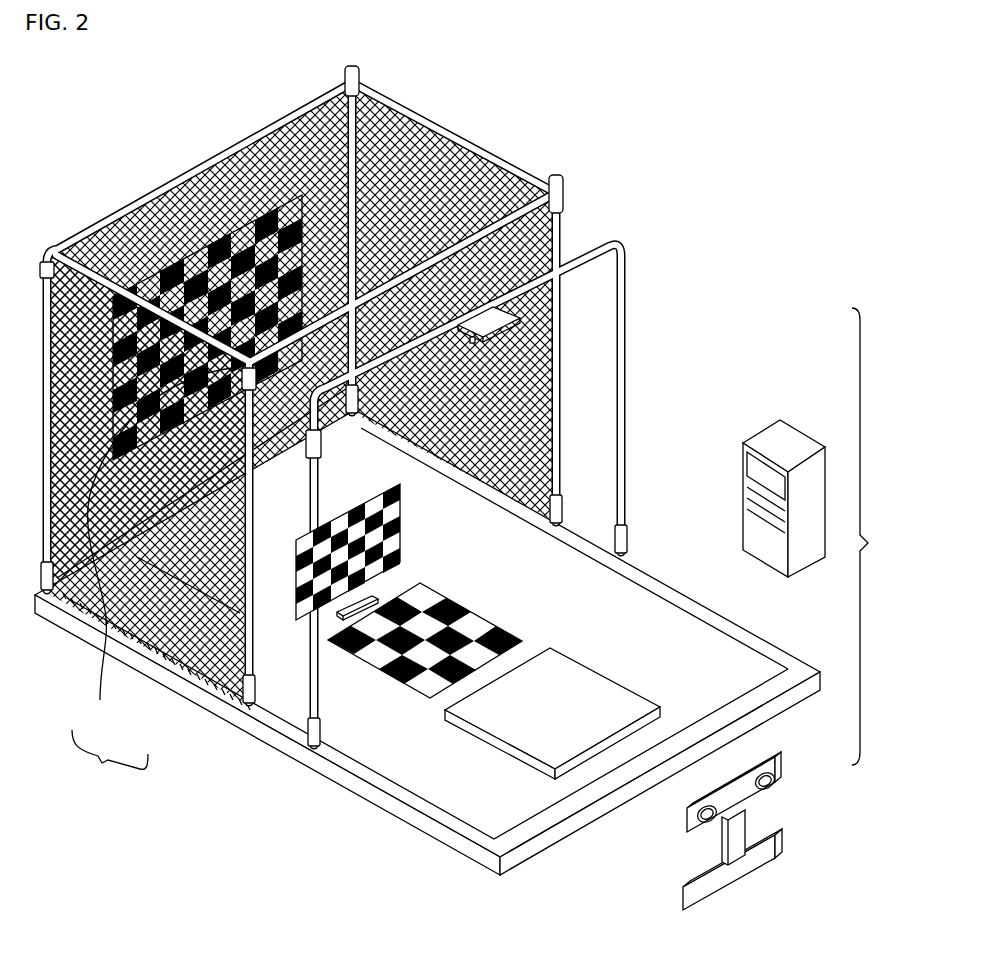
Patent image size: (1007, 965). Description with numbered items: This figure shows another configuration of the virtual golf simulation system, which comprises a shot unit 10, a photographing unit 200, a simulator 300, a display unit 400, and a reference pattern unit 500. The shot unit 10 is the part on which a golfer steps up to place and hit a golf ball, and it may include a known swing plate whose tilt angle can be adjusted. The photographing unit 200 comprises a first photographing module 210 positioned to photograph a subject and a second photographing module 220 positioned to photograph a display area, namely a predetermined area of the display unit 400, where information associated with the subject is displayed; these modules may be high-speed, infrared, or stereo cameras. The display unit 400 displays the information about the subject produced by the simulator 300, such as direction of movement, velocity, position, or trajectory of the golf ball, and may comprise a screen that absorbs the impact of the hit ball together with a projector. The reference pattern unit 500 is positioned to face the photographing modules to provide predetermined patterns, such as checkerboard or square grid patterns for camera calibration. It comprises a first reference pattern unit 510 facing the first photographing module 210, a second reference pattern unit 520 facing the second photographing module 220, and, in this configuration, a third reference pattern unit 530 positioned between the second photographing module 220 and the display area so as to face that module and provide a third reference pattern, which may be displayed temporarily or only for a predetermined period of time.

The shot unit 10 is at (530, 740).
The photographing unit 200 is at (882, 536).
The first photographing module 210 is at (496, 308).
The second photographing module 220 is at (775, 760).
The simulator 300 is at (752, 483).
The display unit 400 is at (195, 243).
The reference pattern unit 500 is at (110, 763).
The first reference pattern unit 510 is at (378, 678).
The second reference pattern unit 520 is at (204, 551).
The third reference pattern unit 530 is at (360, 545).